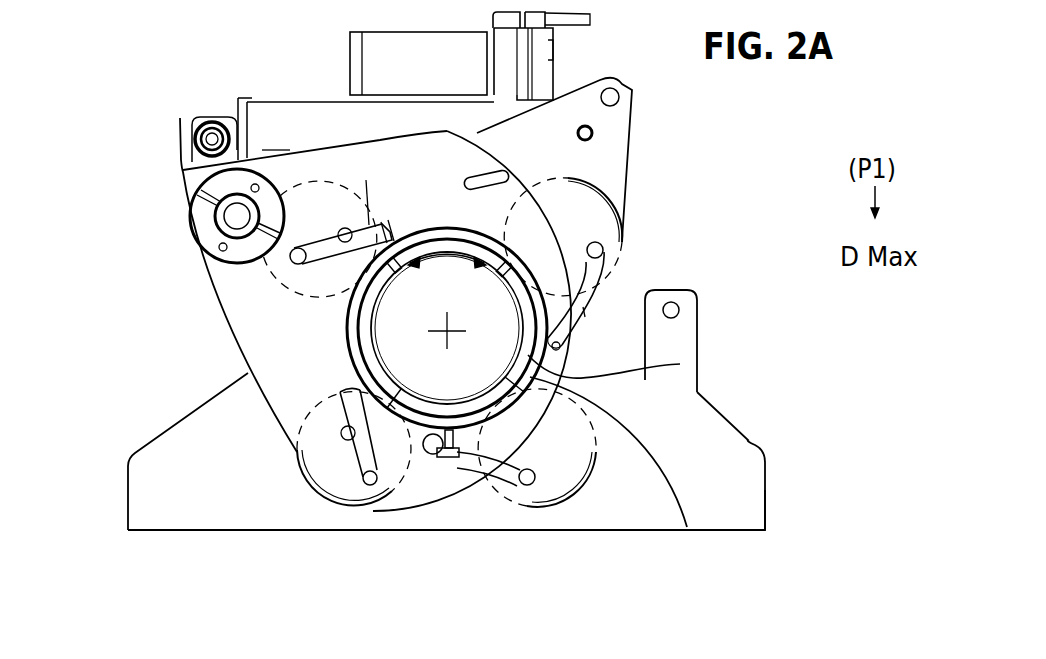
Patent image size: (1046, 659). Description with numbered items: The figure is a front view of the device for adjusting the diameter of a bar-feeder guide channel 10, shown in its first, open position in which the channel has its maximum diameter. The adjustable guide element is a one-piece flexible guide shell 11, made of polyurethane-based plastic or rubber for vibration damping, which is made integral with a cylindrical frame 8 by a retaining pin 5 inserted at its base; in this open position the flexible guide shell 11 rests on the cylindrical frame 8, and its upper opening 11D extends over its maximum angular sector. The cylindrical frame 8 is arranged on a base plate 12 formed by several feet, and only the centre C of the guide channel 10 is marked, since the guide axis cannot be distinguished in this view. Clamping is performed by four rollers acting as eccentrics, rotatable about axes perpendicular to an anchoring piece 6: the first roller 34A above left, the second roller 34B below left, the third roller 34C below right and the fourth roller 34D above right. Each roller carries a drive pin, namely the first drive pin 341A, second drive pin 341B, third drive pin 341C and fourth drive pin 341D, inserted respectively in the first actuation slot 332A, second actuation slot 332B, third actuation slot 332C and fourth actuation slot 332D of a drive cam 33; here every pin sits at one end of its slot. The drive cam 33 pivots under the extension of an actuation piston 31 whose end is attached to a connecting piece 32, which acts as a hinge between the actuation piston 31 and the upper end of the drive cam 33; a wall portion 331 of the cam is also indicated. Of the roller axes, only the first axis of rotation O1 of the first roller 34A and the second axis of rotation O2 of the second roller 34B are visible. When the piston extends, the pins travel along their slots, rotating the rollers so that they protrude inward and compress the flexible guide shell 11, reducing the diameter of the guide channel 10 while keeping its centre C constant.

The retaining pin 5 is at (428, 452).
The anchoring piece 6 is at (620, 118).
The cylindrical frame 8 is at (680, 364).
The guide channel 10 is at (436, 372).
The flexible guide shell 11 is at (687, 527).
The upper opening 11D is at (447, 328).
The base plate 12 is at (745, 470).
The actuation piston 31 is at (334, 137).
The connecting piece 32 is at (187, 173).
The drive cam 33 is at (237, 304).
The housing wall 331 is at (275, 167).
The first actuation slot 332A is at (370, 222).
The second actuation slot 332B is at (345, 462).
The third actuation slot 332C is at (450, 462).
The fourth actuation slot 332D is at (585, 345).
The first roller 34A is at (330, 292).
The second roller 34B is at (360, 457).
The third roller 34C is at (596, 480).
The fourth roller 34D is at (607, 205).
The first drive pin 341A is at (283, 262).
The second drive pin 341B is at (363, 480).
The third drive pin 341C is at (520, 486).
The fourth drive pin 341D is at (605, 247).
The first axis of rotation O1 is at (346, 228).
The second axis of rotation O2 is at (344, 434).
The centre C is at (447, 324).